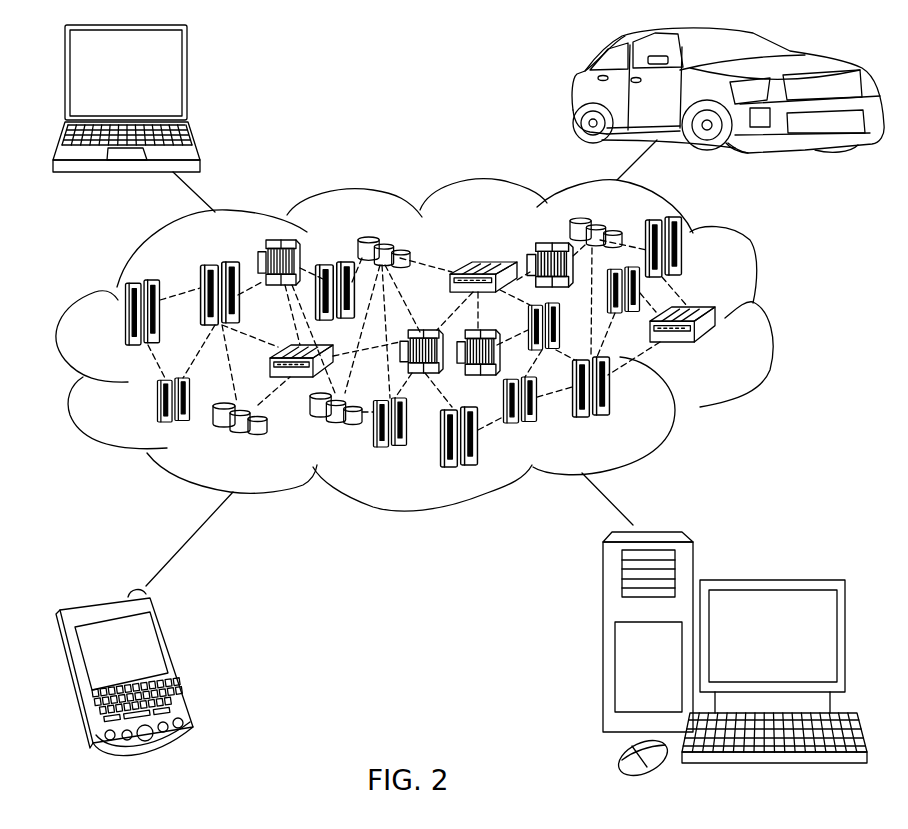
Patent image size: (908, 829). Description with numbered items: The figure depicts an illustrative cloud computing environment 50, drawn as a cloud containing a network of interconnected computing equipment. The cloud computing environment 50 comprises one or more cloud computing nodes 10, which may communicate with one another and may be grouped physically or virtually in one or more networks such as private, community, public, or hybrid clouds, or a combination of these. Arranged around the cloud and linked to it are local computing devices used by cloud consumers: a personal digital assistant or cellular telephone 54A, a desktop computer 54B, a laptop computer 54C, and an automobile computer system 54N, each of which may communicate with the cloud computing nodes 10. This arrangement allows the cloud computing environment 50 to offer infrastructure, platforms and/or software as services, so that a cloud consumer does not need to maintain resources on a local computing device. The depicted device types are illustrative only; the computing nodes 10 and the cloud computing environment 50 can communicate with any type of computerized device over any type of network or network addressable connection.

The cloud computing environment 50 is at (772, 320).
The cloud computing node 10 is at (724, 349).
The personal digital assistant or cellular telephone 54A is at (180, 660).
The desktop computer 54B is at (773, 580).
The laptop computer 54C is at (187, 80).
The automobile computer system 54N is at (576, 92).